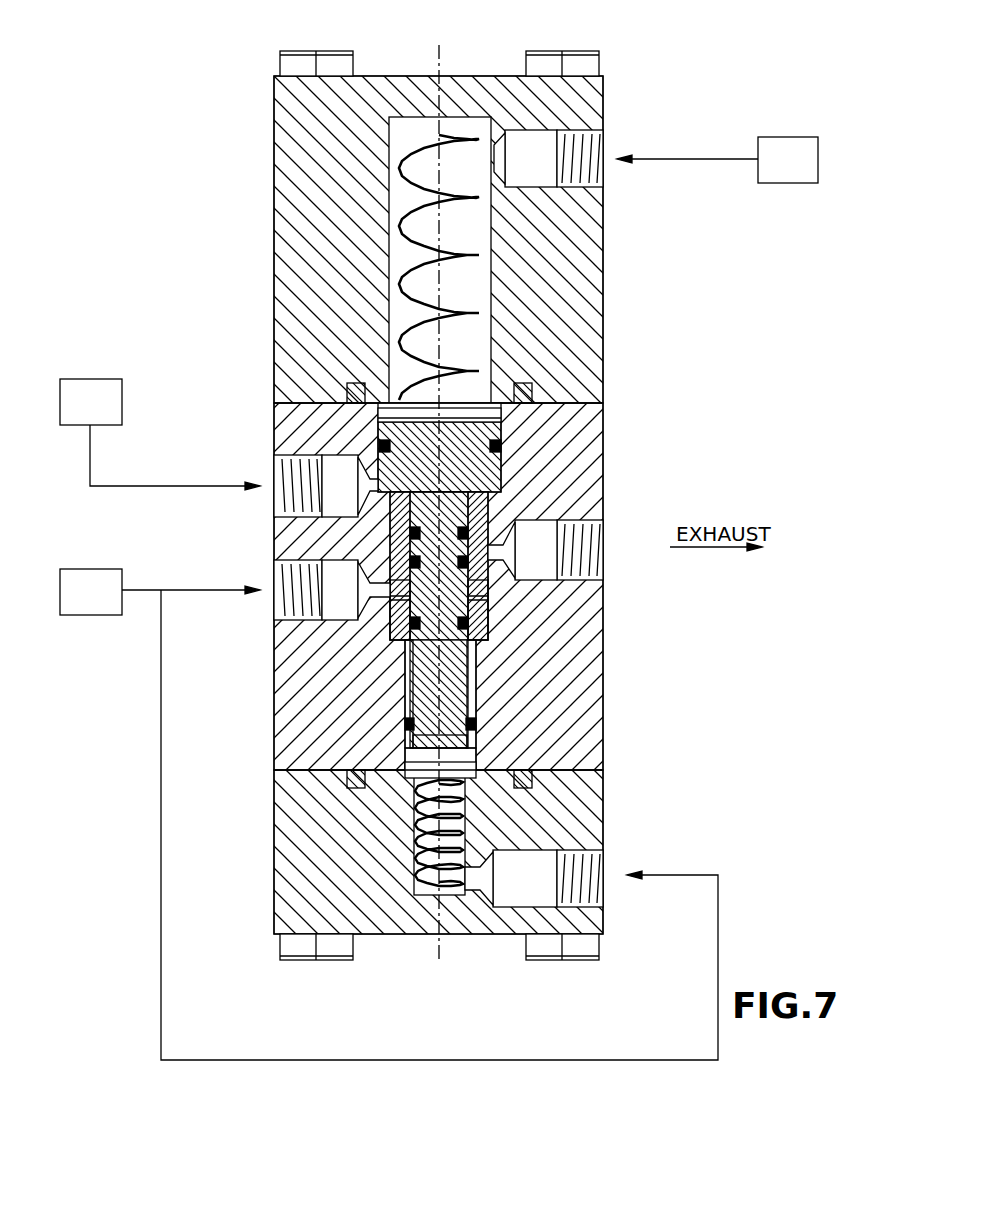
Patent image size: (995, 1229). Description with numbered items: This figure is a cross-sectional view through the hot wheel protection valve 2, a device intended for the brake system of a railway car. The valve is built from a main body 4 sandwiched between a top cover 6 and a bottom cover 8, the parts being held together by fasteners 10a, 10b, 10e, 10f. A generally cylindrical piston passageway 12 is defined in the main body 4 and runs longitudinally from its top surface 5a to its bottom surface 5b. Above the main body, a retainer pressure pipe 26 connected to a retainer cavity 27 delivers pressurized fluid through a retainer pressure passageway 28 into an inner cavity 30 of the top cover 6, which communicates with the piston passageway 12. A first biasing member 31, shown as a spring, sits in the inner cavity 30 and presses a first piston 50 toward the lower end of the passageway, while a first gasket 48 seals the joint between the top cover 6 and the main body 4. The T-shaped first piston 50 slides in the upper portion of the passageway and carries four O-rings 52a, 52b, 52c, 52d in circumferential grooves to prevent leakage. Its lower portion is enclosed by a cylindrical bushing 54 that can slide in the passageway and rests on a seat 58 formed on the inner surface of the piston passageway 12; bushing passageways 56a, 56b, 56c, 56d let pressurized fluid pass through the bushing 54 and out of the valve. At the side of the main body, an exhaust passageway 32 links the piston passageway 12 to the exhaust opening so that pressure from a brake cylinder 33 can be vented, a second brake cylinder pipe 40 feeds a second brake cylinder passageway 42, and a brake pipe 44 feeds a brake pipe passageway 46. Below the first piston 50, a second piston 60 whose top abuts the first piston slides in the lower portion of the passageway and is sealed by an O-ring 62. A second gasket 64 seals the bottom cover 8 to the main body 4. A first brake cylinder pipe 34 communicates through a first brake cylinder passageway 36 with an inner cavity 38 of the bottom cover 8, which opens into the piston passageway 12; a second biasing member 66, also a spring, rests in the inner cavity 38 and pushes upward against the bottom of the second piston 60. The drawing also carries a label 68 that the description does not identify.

The hot wheel protection valve 2 is at (226, 182).
The main body 4 is at (285, 740).
The top surface 5a is at (335, 395).
The bottom surface 5b is at (345, 778).
The top cover 6 is at (282, 240).
The bottom cover 8 is at (285, 905).
The fastener 10a is at (298, 57).
The fastener 10b is at (573, 57).
The fastener 10e is at (298, 958).
The fastener 10f is at (573, 958).
The piston passageway 12 is at (540, 440).
The retainer pressure pipe 26 is at (705, 159).
The retainer cavity 27 is at (778, 137).
The retainer pressure passageway 28 is at (528, 140).
The inner cavity 30 is at (460, 310).
The first biasing member 31 is at (510, 235).
The exhaust passageway 32 is at (505, 570).
The brake cylinder 33 is at (92, 615).
The first brake cylinder pipe 34 is at (718, 875).
The first brake cylinder passageway 36 is at (540, 870).
The inner cavity 38 is at (450, 830).
The second brake cylinder pipe 40 is at (190, 598).
The second brake cylinder passageway 42 is at (325, 590).
The brake pipe 44 is at (190, 462).
The brake pipe passageway 46 is at (330, 463).
The first gasket 48 is at (470, 418).
The first piston 50 is at (565, 535).
The O-ring 52a is at (500, 447).
The O-ring 52b is at (480, 555).
The O-ring 52c is at (472, 618).
The O-ring 52d is at (472, 722).
The bushing 54 is at (455, 690).
The bushing passageway 56a is at (395, 505).
The bushing passageway 56b is at (395, 640).
The bushing passageway 56c is at (470, 600).
The bushing passageway 56d is at (470, 650).
The seat 58 is at (405, 690).
The second piston 60 is at (470, 745).
The O-ring 62 is at (470, 770).
The second gasket 64 is at (405, 790).
The second biasing member 66 is at (420, 880).
The pressure source 68 is at (90, 380).